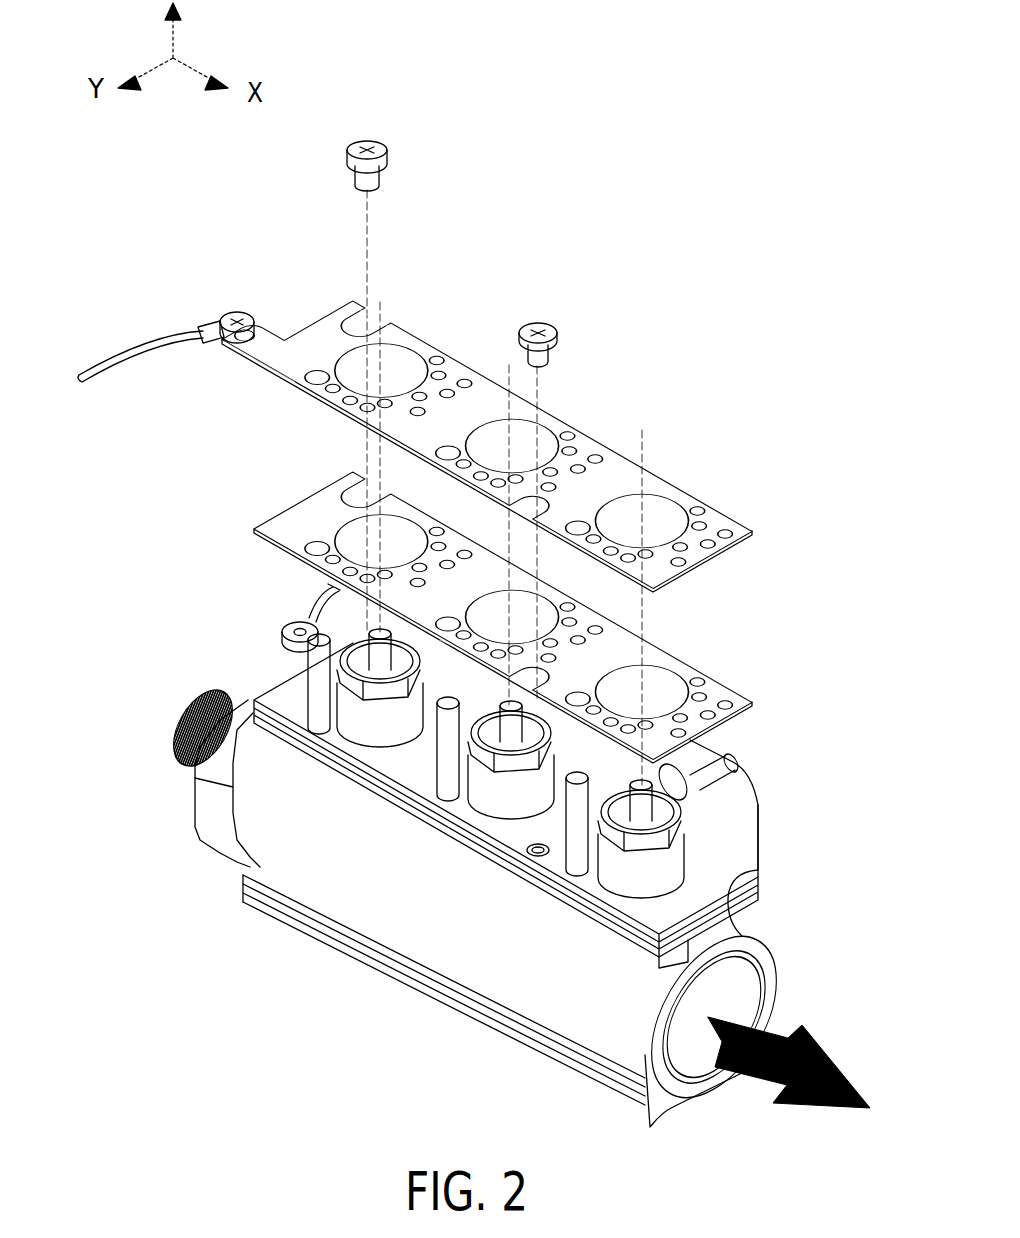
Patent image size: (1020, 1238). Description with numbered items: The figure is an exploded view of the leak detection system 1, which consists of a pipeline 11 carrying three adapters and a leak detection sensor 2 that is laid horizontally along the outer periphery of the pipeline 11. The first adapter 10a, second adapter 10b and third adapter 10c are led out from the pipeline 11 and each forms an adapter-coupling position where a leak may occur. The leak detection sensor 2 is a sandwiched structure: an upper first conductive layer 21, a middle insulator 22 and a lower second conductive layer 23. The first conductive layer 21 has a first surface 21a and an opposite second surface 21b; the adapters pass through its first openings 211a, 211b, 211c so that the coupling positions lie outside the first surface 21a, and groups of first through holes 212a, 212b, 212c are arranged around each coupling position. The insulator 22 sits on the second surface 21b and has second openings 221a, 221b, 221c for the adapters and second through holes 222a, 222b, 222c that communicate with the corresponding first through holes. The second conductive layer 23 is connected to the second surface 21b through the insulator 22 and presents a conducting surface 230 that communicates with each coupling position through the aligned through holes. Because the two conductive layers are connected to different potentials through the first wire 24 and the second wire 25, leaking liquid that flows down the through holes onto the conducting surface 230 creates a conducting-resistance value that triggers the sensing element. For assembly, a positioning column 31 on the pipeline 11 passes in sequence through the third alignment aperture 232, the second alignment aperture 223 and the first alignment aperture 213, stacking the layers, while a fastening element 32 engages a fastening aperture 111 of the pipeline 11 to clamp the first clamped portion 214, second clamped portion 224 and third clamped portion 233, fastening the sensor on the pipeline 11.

The leak detection system 1 is at (474, 571).
The leak detection sensor 2 is at (505, 692).
The first adapter 10a is at (230, 860).
The second adapter 10b is at (470, 835).
The third adapter 10c is at (733, 905).
The pipeline 11 is at (650, 969).
The fastening aperture 111 is at (540, 905).
The first conductive layer 21 is at (511, 420).
The first surface 21a is at (398, 336).
The second surface 21b is at (293, 382).
The first opening 211a is at (352, 360).
The first opening 211b is at (544, 442).
The first opening 211c is at (657, 513).
The first through hole 212a is at (462, 380).
The first through hole 212b is at (596, 456).
The first through hole 212c is at (727, 533).
The first alignment aperture 213 is at (238, 313).
The first clamped portion 214 is at (567, 432).
The insulator 22 is at (506, 804).
The second opening 221a is at (341, 541).
The second opening 221b is at (492, 626).
The second opening 221c is at (638, 700).
The second through hole 222a is at (466, 553).
The second through hole 222b is at (595, 630).
The second through hole 222c is at (728, 705).
The second alignment aperture 223 is at (320, 551).
The second clamped portion 224 is at (452, 650).
The second conductive layer 23 is at (474, 860).
The conducting surface 230 is at (245, 893).
The third alignment aperture 232 is at (196, 808).
The third clamped portion 233 is at (527, 853).
The first wire 24 is at (202, 338).
The second wire 25 is at (313, 602).
The positioning column 31 is at (317, 680).
The fastening element 32 is at (556, 330).